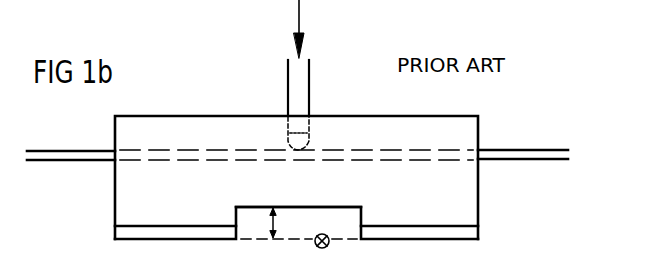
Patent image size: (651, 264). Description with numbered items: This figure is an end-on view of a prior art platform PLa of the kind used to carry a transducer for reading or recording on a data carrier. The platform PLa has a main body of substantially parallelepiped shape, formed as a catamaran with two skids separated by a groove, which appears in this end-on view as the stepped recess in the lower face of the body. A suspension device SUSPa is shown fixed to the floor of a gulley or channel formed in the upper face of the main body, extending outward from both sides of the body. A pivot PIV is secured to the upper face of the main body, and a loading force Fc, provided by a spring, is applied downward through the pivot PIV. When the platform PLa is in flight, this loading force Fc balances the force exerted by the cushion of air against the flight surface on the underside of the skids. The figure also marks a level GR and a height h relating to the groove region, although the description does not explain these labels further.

The suspension device SUSPa is at (92, 150).
The platform PLa is at (480, 138).
The pivot PIV is at (288, 74).
The loading force Fc is at (315, 29).
The boundary / grid level GR is at (293, 204).
The height h is at (282, 223).